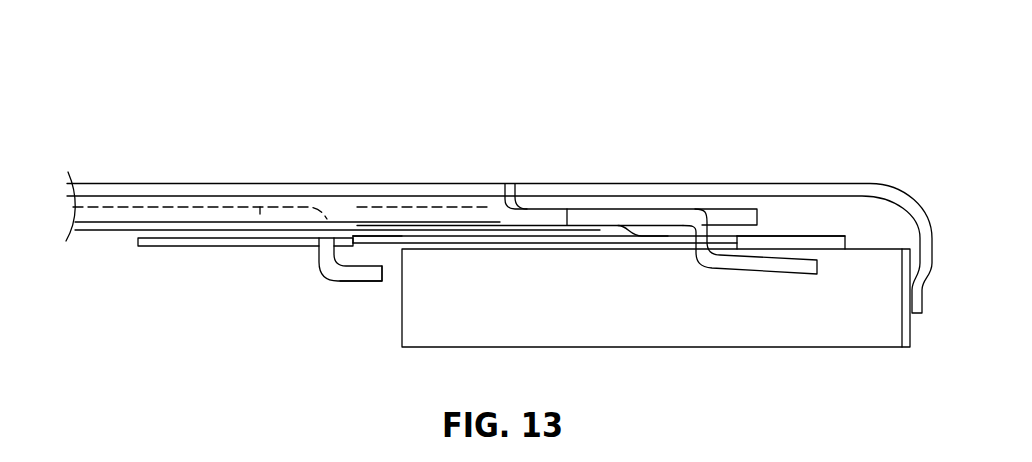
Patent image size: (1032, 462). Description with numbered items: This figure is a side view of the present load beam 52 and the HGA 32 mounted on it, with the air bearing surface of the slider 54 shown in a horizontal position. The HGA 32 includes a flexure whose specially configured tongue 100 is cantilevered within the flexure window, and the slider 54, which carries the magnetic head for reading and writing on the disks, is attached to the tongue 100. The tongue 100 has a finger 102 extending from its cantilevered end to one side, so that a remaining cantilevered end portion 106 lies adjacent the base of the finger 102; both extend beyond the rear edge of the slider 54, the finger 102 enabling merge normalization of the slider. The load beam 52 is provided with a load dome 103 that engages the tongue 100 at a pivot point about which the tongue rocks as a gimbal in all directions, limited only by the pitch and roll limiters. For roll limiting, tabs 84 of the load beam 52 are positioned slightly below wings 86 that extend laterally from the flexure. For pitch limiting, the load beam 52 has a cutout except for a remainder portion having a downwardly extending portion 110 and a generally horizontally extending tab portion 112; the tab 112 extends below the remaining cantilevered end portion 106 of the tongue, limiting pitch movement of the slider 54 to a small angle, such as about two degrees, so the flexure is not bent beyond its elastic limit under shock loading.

The load beam 52 is at (212, 178).
The HGA 32 is at (477, 214).
The remaining cantilevered end portion 106 is at (362, 236).
The wings 86 is at (813, 237).
The finger 102 is at (147, 246).
The downwardly extending portion 110 is at (322, 260).
The tab portion 112 is at (355, 283).
The tongue 100 is at (463, 249).
The slider 54 is at (572, 308).
The load dome 103 is at (682, 240).
The tabs 84 is at (788, 274).